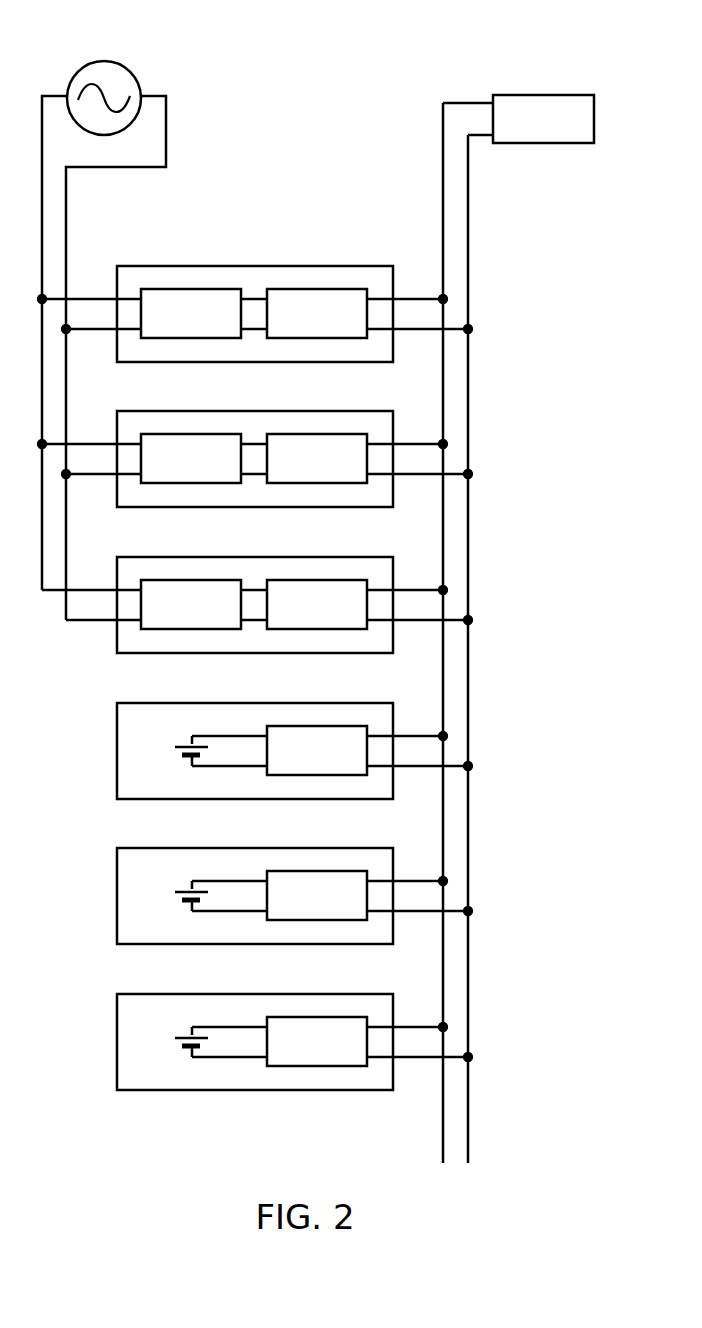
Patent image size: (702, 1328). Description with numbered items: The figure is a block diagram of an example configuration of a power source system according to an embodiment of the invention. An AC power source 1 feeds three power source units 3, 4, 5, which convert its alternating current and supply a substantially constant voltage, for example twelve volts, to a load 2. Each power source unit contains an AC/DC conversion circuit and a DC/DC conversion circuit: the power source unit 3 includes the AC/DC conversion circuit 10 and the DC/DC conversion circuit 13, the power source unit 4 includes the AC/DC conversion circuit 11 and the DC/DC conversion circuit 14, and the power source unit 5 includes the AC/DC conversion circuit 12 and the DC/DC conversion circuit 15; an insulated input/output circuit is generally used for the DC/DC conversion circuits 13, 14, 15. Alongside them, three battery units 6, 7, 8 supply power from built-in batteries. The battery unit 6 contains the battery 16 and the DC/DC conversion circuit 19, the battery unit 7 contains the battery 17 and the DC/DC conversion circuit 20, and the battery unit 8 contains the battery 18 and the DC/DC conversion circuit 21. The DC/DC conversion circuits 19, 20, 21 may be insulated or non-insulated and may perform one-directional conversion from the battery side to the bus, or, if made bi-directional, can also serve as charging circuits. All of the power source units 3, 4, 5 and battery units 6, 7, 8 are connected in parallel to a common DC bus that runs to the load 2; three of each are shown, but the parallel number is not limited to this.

The AC power source 1 is at (99, 62).
The load 2 is at (535, 95).
The power source unit 3 is at (215, 266).
The power source unit 4 is at (215, 411).
The power source unit 5 is at (215, 557).
The battery unit 6 is at (215, 703).
The battery unit 7 is at (215, 848).
The battery unit 8 is at (215, 994).
The AC/DC conversion circuit 10 is at (167, 289).
The AC/DC conversion circuit 11 is at (167, 434).
The AC/DC conversion circuit 12 is at (167, 580).
The DC/DC conversion circuit 13 is at (318, 289).
The DC/DC conversion circuit 14 is at (318, 434).
The DC/DC conversion circuit 15 is at (318, 580).
The battery 16 is at (190, 744).
The battery 17 is at (190, 889).
The battery 18 is at (190, 1035).
The DC/DC conversion circuit 19 is at (318, 726).
The DC/DC conversion circuit 20 is at (318, 871).
The DC/DC conversion circuit 21 is at (318, 1017).